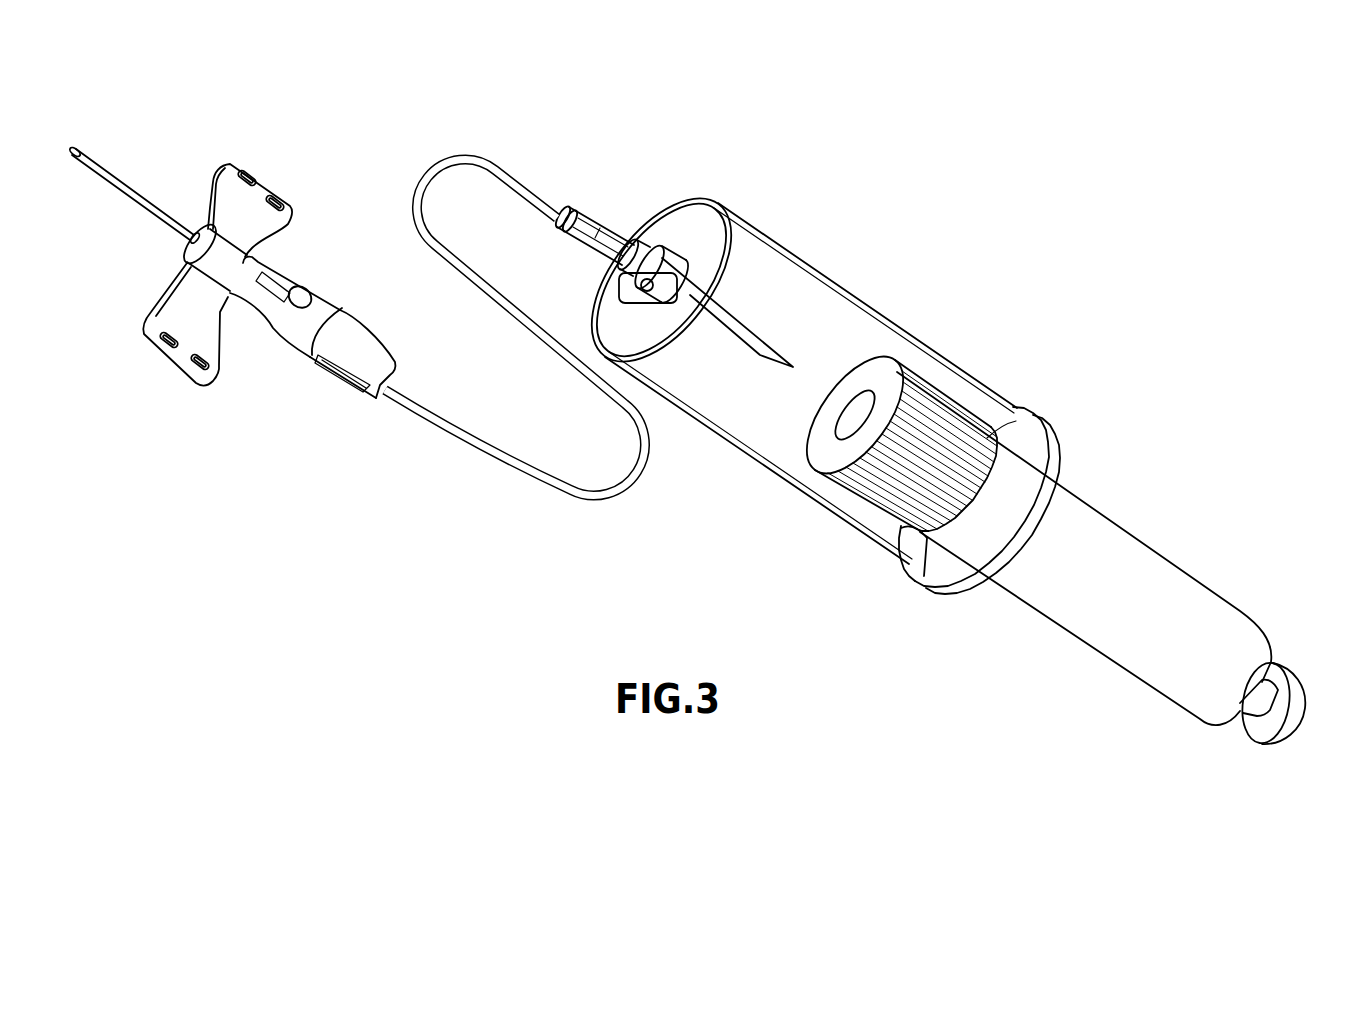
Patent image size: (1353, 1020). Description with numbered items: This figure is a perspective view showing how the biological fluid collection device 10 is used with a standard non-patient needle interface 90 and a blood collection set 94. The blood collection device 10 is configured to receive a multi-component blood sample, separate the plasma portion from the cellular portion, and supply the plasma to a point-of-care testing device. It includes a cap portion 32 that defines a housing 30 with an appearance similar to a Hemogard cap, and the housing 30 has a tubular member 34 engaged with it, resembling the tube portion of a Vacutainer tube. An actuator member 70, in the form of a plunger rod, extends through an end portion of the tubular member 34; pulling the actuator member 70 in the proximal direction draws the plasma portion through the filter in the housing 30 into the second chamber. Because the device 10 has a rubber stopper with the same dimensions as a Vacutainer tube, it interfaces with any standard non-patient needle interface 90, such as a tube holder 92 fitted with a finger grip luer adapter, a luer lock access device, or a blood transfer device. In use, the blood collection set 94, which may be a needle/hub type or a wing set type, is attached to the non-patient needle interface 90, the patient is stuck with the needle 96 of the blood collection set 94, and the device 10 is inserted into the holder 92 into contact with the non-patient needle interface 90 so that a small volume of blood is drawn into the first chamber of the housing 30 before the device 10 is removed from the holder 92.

The biological fluid collection device 10 is at (934, 487).
The housing 30 is at (897, 408).
The cap portion 32 is at (923, 416).
The tubular member 34 is at (1138, 562).
The actuator member 70 is at (1267, 730).
The non-patient needle interface 90 is at (609, 175).
The tube holder 92 is at (826, 280).
The blood collection set 94 is at (158, 156).
The needle 96 is at (112, 187).